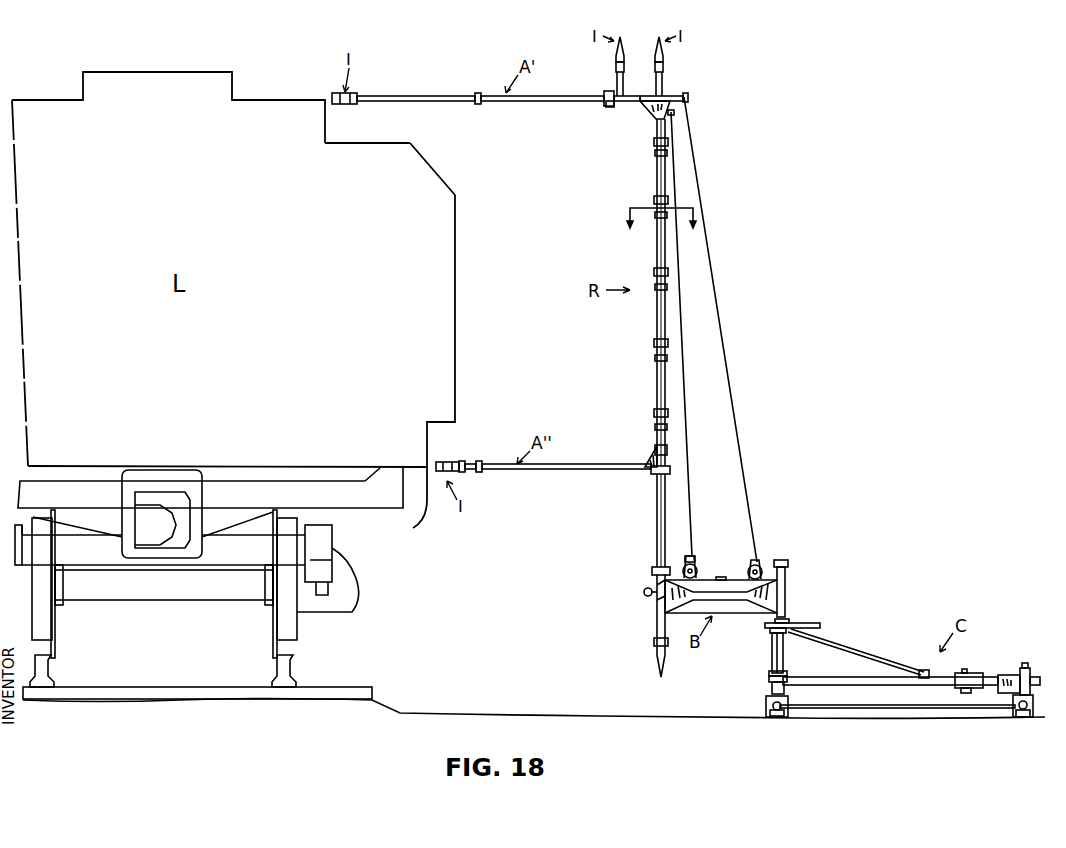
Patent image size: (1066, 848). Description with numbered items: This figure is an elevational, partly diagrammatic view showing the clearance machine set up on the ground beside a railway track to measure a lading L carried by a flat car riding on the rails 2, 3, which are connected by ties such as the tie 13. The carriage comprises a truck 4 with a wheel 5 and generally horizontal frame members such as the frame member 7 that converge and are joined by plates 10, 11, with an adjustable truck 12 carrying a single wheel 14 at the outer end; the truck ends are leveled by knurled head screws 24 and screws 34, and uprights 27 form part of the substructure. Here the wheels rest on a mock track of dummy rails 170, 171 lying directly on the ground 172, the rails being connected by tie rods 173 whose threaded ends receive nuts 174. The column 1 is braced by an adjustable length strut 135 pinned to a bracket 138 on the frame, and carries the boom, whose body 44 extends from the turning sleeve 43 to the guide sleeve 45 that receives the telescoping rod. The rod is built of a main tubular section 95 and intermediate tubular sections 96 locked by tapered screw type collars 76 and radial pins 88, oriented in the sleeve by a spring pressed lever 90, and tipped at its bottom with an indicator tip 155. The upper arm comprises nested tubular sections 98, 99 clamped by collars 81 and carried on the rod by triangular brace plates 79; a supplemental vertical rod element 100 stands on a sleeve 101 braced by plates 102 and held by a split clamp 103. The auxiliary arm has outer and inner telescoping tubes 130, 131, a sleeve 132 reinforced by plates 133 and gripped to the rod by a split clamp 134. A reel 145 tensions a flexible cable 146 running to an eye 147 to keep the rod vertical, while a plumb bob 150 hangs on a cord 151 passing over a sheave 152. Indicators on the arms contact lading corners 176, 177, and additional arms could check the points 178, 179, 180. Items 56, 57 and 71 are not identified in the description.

The column 1 is at (784, 656).
The rail 2 is at (55, 668).
The rail 3 is at (296, 668).
The truck 4 is at (769, 681).
The wheel 5 is at (771, 690).
The frame member 7 is at (846, 687).
The plate 10 is at (965, 673).
The plate 11 is at (968, 693).
The adjustable truck 12 is at (1008, 675).
The tie 13 is at (140, 691).
The wheel 14 is at (1042, 700).
The knurled head screw 24 is at (769, 674).
The upright 27 is at (772, 656).
The screw 34 is at (1025, 663).
The turning sleeve 43 is at (786, 593).
The boom body 44 is at (710, 592).
The guide sleeve 45 is at (656, 606).
The collar 56 is at (770, 631).
The cross bar 57 is at (796, 624).
The knob 71 is at (644, 592).
The tapered screw type collar 76 is at (669, 142).
The triangular brace plate 79 is at (646, 113).
The clamping collar 81 is at (477, 93).
The radial pin 88 is at (654, 154).
The spring pressed lever 90 is at (652, 571).
The main tubular section 95 is at (656, 532).
The intermediate tubular section 96 is at (656, 178).
The outermost tube section 98 is at (503, 104).
The tubular section 99 is at (401, 104).
The supplemental vertical rod element 100 is at (616, 80).
The sleeve 101 is at (613, 105).
The triangular brace plate 102 is at (607, 92).
The split clamp 103 is at (606, 106).
The outer telescoping tube 130 is at (574, 464).
The inner telescoping tube 131 is at (470, 463).
The sleeve 132 is at (668, 451).
The plate 133 is at (648, 450).
The split clamp 134 is at (652, 474).
The adjustable length strut 135 is at (870, 657).
The bracket 138 is at (929, 672).
The reel 145 is at (755, 562).
The flexible cable 146 is at (733, 374).
The eye 147 is at (689, 101).
The plumb bob 150 is at (688, 555).
The flexible cord 151 is at (692, 494).
The sheave 152 is at (676, 113).
The indicator tip 155 is at (654, 664).
The dummy rail 170 is at (776, 722).
The dummy rail 171 is at (1022, 720).
The ground surface 172 is at (643, 717).
The tie rod 173 is at (882, 705).
The nut 174 is at (767, 712).
The lading corner 176 is at (334, 94).
The lading corner 177 is at (418, 515).
The lading point 178 is at (411, 144).
The lading point 179 is at (456, 200).
The lading point 180 is at (456, 421).